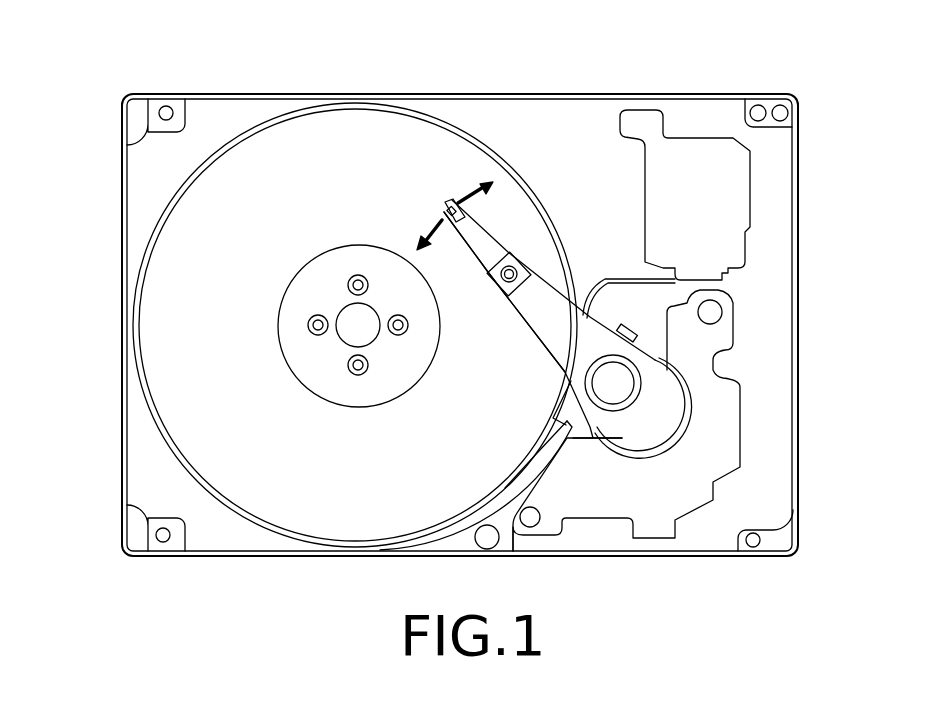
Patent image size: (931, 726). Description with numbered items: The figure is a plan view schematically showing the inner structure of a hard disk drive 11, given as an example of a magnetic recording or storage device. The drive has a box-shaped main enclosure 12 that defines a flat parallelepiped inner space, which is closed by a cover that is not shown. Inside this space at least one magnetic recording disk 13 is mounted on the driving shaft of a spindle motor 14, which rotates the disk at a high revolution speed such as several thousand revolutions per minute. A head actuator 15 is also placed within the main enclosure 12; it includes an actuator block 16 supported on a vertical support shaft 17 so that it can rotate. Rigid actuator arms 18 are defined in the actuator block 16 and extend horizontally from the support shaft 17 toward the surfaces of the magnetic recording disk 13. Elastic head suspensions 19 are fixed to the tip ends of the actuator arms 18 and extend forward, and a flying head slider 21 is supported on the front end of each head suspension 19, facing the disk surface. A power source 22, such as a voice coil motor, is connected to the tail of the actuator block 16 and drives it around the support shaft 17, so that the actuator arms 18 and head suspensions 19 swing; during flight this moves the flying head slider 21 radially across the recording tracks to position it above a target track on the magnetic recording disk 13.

The hard disk drive 11 is at (362, 93).
The main enclosure 12 is at (120, 175).
The magnetic recording disk 13 is at (153, 248).
The spindle motor 14 is at (347, 342).
The head actuator 15 is at (562, 265).
The actuator block 16 is at (582, 402).
The support shaft 17 is at (633, 393).
The actuator arm 18 is at (537, 323).
The head suspension 19 is at (485, 262).
The flying head slider 21 is at (443, 210).
The power source 22 is at (615, 433).